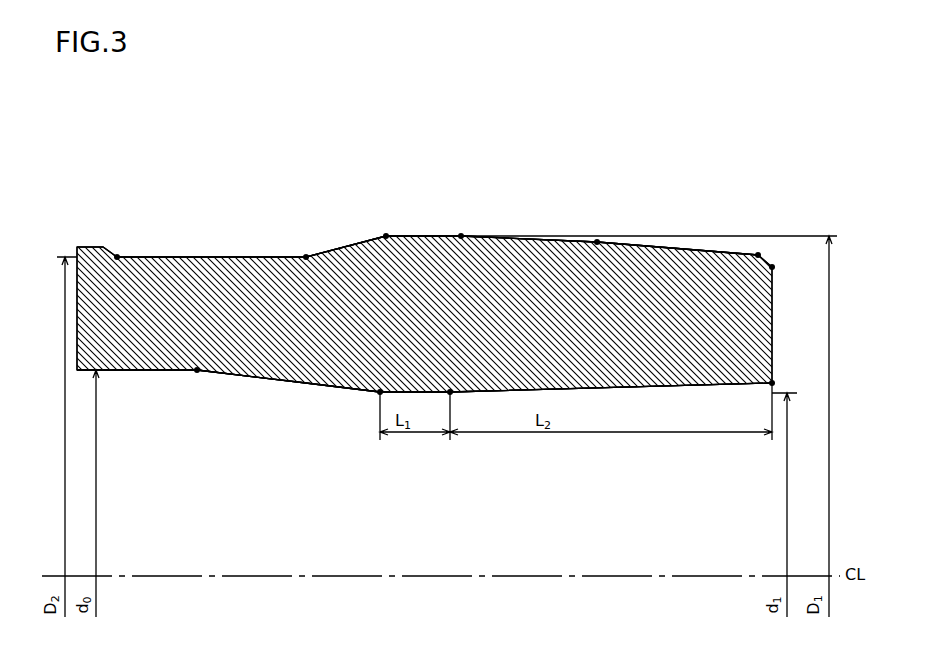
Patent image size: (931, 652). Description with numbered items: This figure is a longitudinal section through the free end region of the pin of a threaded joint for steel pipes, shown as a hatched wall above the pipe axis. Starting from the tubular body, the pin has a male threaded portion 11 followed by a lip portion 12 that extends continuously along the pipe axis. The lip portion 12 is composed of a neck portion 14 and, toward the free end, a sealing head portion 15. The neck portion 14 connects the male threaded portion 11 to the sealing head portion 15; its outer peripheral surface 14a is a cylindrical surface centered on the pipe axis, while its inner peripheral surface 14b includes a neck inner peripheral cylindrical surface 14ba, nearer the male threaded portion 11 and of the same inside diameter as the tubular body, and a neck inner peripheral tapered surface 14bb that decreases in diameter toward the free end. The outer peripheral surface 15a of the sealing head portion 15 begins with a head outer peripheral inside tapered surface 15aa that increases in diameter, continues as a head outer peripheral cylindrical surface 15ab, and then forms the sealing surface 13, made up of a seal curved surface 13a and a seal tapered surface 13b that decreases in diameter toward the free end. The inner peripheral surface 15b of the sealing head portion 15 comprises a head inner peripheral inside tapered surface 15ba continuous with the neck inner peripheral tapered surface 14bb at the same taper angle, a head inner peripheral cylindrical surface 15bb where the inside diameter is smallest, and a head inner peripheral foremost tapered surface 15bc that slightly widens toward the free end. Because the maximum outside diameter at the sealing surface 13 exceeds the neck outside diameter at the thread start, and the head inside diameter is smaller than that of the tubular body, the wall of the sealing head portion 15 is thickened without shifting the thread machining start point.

The male threaded portion 11 is at (109, 99).
The lip portion 12 is at (698, 219).
The sealing surface 13 is at (557, 171).
The seal curved surface 13a is at (545, 239).
The seal tapered surface 13b is at (670, 248).
The neck portion 14 is at (306, 257).
The outer peripheral surface of the neck portion 14a is at (198, 257).
The inner peripheral surface of the neck portion 14b is at (255, 437).
The neck inner peripheral cylindrical surface 14ba is at (162, 371).
The neck inner peripheral tapered surface 14bb is at (245, 376).
The sealing head portion 15 is at (773, 267).
The outer peripheral surface of the sealing head portion 15a is at (372, 143).
The head outer peripheral inside tapered surface 15aa is at (342, 246).
The head outer peripheral cylindrical surface 15ab is at (425, 236).
The inner peripheral surface of the sealing head portion 15b is at (363, 483).
The head inner peripheral inside tapered surface 15ba is at (342, 389).
The head inner peripheral cylindrical surface 15bb is at (430, 392).
The head inner peripheral foremost tapered surface 15bc is at (617, 388).